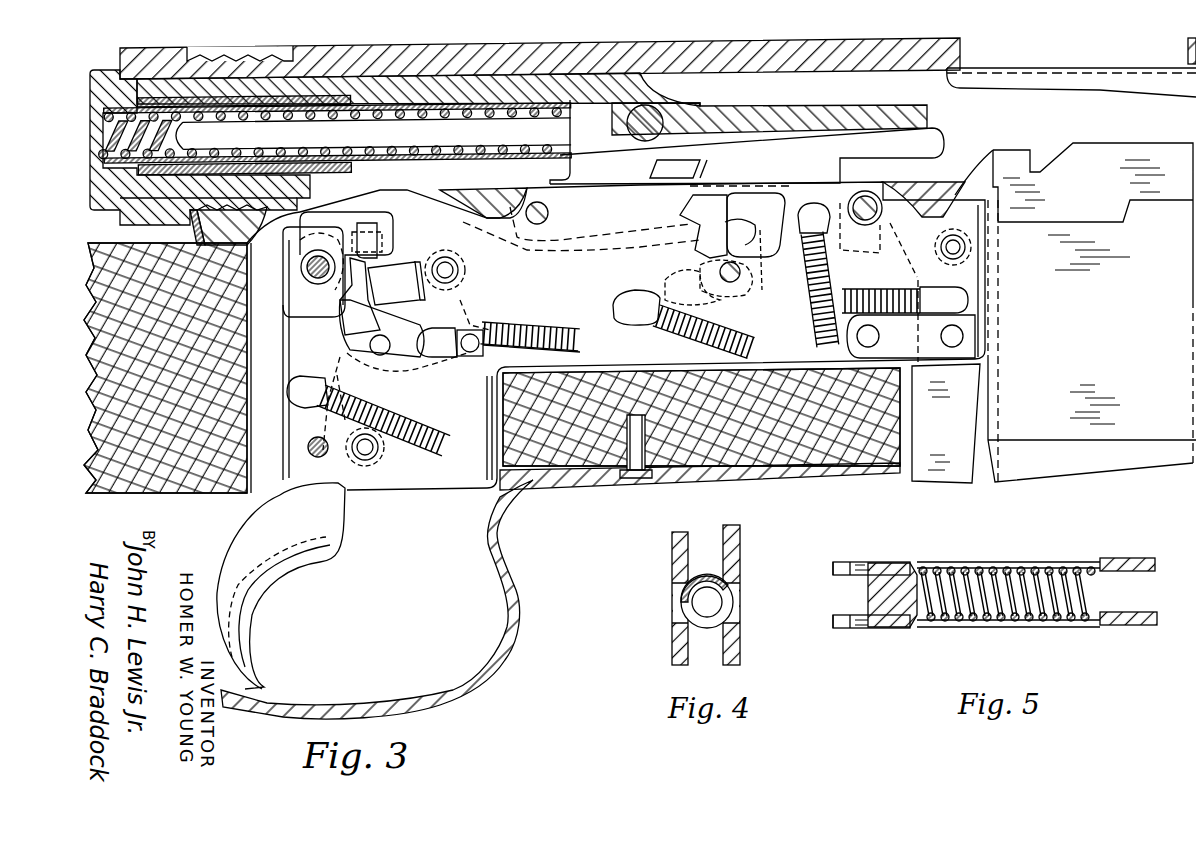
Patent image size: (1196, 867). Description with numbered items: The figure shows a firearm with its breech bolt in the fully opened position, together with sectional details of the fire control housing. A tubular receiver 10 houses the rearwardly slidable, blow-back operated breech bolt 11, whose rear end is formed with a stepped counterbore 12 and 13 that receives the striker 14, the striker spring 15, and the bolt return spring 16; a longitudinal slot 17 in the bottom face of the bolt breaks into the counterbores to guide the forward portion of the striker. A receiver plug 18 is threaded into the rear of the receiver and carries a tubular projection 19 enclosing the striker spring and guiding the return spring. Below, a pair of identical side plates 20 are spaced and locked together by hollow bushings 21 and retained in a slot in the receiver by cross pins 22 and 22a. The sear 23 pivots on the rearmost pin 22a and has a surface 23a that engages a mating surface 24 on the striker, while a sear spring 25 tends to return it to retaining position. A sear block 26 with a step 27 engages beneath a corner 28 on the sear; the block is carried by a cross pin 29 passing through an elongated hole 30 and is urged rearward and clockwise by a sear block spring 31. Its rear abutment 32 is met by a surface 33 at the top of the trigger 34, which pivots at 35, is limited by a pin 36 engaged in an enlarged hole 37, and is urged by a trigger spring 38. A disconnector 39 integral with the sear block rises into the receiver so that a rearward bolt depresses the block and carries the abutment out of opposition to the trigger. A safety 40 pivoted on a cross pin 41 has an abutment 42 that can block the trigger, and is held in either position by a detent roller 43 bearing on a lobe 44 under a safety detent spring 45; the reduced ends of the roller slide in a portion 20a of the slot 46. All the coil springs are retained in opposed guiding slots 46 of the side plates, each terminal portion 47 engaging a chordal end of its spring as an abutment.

In FIG. 3, the tubular receiver 10 is at (580, 46).
In FIG. 3, the breech bolt 11 is at (625, 85).
In FIG. 3, the stepped counterbore 12 is at (540, 106).
In FIG. 3, the stepped counterbore 13 is at (358, 76).
In FIG. 3, the striker 14 is at (747, 143).
In FIG. 3, the striker spring 15 is at (492, 106).
In FIG. 3, the bolt return spring 16 is at (305, 98).
In FIG. 3, the longitudinal slot 17 is at (945, 172).
In FIG. 3, the receiver plug 18 is at (90, 82).
In FIG. 3, the tubular projection 19 is at (215, 112).
In FIG. 3, the side plates 20 is at (695, 370).
In FIG. 4, the side plates 20 is at (670, 560).
In FIG. 5, the side plates 20 is at (1115, 560).
In FIG. 3, the slot portion 20a is at (485, 330).
In FIG. 5, the slot portion 20a is at (868, 562).
In FIG. 3, the hollow bushings 21 is at (455, 276).
In FIG. 3, the cross pin 22 is at (858, 194).
In FIG. 3, the cross pin 22a is at (548, 222).
In FIG. 3, the sear 23 is at (660, 222).
In FIG. 3, the sear surface 23a is at (710, 172).
In FIG. 3, the striker surface 24 is at (675, 170).
In FIG. 3, the sear spring 25 is at (818, 275).
In FIG. 3, the sear block 26 is at (752, 245).
In FIG. 3, the step 27 is at (745, 225).
In FIG. 3, the corner 28 is at (722, 225).
In FIG. 3, the cross pin 29 is at (742, 282).
In FIG. 3, the elongated hole 30 is at (697, 266).
In FIG. 3, the sear block spring 31 is at (672, 330).
In FIG. 3, the abutment 32 is at (392, 265).
In FIG. 3, the trigger surface 33 is at (365, 236).
In FIG. 3, the trigger 34 is at (325, 530).
In FIG. 3, the trigger pivot 35 is at (322, 455).
In FIG. 3, the pin 36 is at (325, 258).
In FIG. 3, the enlarged hole 37 is at (312, 283).
In FIG. 3, the trigger spring 38 is at (346, 408).
In FIG. 3, the disconnector 39 is at (372, 193).
In FIG. 3, the safety 40 is at (410, 378).
In FIG. 3, the cross pin 41 is at (378, 355).
In FIG. 3, the abutment 42 is at (373, 375).
In FIG. 3, the detent roller 43 is at (472, 334).
In FIG. 5, the detent roller 43 is at (895, 628).
In FIG. 3, the lobe 44 is at (470, 370).
In FIG. 3, the safety detent spring 45 is at (525, 352).
In FIG. 4, the safety detent spring 45 is at (682, 610).
In FIG. 5, the safety detent spring 45 is at (972, 575).
In FIG. 3, the guiding slots 46 is at (535, 338).
In FIG. 4, the guiding slots 46 is at (680, 618).
In FIG. 5, the guiding slots 46 is at (1012, 566).
In FIG. 3, the terminal portion 47 is at (578, 338).